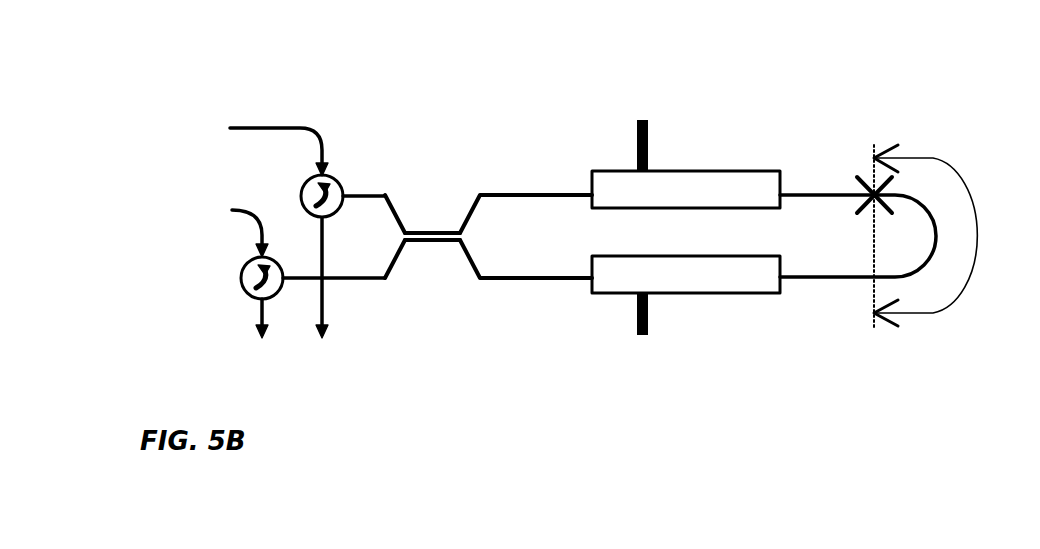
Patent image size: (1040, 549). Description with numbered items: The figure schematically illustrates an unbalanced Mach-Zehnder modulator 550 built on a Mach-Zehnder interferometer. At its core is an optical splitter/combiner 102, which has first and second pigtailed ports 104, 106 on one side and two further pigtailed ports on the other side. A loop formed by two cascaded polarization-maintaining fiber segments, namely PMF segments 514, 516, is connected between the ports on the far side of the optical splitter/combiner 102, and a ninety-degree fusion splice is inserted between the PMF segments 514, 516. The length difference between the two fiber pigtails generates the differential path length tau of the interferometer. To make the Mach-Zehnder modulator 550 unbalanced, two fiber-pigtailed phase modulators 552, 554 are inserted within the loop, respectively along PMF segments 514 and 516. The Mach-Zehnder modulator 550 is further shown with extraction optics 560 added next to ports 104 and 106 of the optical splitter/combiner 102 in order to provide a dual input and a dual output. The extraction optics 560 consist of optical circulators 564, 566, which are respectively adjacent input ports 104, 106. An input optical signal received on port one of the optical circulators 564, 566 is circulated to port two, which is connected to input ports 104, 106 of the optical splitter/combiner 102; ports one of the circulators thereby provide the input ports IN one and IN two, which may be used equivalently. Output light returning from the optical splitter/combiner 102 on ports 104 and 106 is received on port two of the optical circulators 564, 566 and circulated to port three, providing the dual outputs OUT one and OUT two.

The extraction optics 560 is at (330, 108).
The optical circulator 564 is at (349, 152).
The optical circulator 566 is at (240, 280).
The first pigtailed port 104 is at (393, 194).
The second pigtailed port 106 is at (388, 282).
The optical splitter/combiner 102 is at (412, 231).
The PMF segment 514 is at (540, 194).
The PMF segment 516 is at (527, 280).
The fiber-pigtailed phase modulator 552 is at (697, 171).
The fiber-pigtailed phase modulator 554 is at (712, 294).
The unbalanced Mach-Zehnder modulator 550 is at (882, 91).